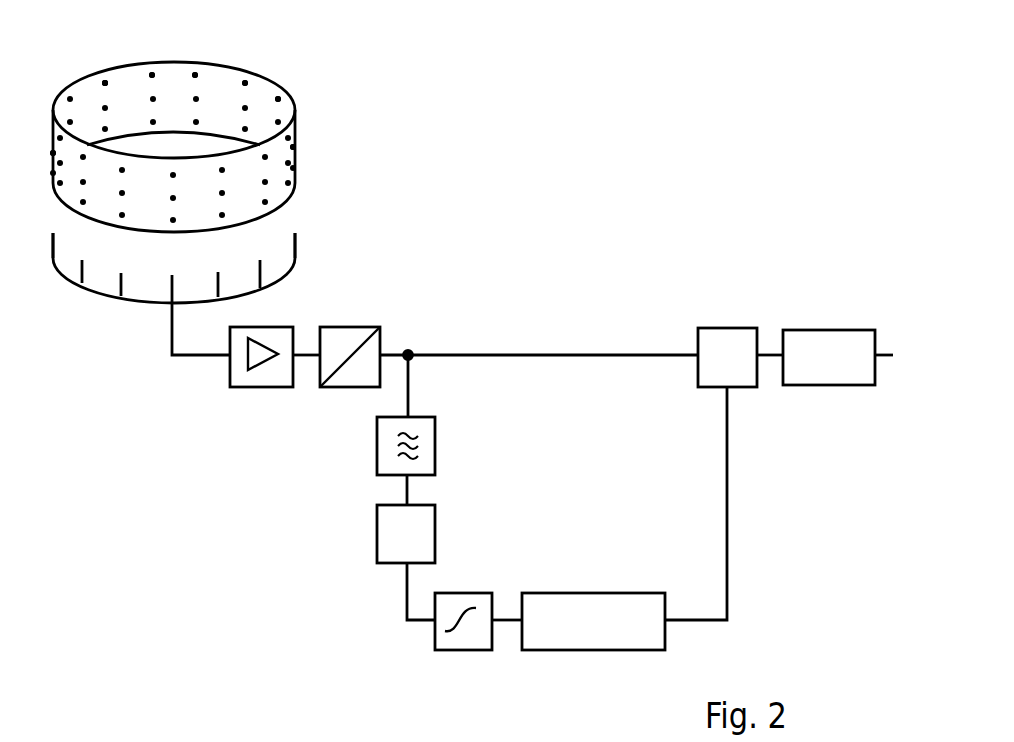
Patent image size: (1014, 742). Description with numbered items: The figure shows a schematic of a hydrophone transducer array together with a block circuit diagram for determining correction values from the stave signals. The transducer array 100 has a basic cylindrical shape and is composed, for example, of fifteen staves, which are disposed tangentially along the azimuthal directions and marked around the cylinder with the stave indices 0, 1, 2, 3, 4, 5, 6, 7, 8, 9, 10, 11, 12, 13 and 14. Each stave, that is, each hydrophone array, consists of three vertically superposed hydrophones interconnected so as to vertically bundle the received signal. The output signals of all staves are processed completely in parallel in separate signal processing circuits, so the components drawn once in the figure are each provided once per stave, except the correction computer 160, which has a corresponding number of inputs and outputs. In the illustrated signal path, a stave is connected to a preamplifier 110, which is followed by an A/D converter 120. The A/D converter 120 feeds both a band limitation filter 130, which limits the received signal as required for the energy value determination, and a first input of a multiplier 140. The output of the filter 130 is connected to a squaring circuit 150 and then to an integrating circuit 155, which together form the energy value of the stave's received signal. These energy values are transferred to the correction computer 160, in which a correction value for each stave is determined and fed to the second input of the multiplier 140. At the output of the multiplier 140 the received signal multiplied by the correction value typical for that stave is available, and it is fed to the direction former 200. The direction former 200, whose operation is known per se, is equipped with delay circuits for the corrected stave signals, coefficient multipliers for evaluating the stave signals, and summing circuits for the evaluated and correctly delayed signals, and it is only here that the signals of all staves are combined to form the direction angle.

The transducer array 100 is at (252, 88).
The preamplifier 110 is at (243, 380).
The A/D converter 120 is at (363, 332).
The band limitation filter 130 is at (430, 440).
The multiplier 140 is at (715, 332).
The squaring circuit 150 is at (430, 518).
The integrating circuit 155 is at (460, 600).
The correction computer 160 is at (607, 597).
The direction former 200 is at (812, 330).
The stave index 0 is at (171, 274).
The stave index 1 is at (220, 268).
The stave index 2 is at (260, 257).
The stave index 3 is at (293, 231).
The stave index 4 is at (303, 125).
The stave index 5 is at (286, 78).
The stave index 6 is at (252, 64).
The stave index 7 is at (201, 54).
The stave index 8 is at (151, 54).
The stave index 9 is at (101, 64).
The stave index 10 is at (78, 72).
The stave index 11 is at (43, 128).
The stave index 12 is at (58, 231).
The stave index 13 is at (83, 255).
The stave index 14 is at (121, 268).